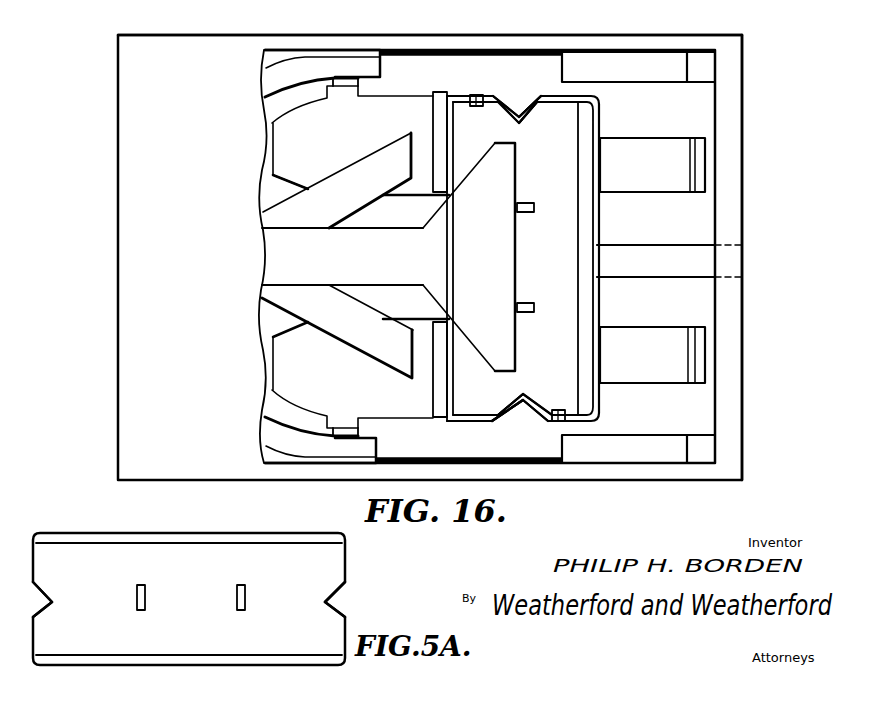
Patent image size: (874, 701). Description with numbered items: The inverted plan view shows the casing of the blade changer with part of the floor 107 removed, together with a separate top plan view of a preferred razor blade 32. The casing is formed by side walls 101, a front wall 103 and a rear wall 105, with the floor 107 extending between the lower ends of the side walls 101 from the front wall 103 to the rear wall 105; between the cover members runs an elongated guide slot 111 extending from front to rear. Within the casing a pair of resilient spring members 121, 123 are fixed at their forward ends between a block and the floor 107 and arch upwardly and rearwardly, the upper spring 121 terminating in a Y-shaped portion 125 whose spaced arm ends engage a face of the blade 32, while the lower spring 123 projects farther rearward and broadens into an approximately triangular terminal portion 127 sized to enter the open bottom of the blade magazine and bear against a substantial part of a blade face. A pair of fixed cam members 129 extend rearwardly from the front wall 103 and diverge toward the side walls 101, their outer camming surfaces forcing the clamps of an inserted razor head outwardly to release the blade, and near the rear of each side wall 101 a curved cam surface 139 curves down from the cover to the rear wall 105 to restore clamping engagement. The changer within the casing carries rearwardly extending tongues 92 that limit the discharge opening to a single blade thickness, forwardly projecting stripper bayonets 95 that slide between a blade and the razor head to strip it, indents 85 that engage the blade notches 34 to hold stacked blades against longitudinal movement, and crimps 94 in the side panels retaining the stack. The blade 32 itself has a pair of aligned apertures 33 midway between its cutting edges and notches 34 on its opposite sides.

In FIG. 16, the razor blade 32 is at (550, 222).
In FIG. 5A, the razor blade 32 is at (110, 563).
In FIG. 16, the apertures 33 is at (522, 203).
In FIG. 5A, the apertures 33 is at (235, 602).
In FIG. 16, the notches 34 is at (537, 107).
In FIG. 5A, the notches 34 is at (53, 605).
In FIG. 16, the indents 85 is at (528, 106).
In FIG. 16, the tongues 92 is at (628, 150).
In FIG. 16, the crimps 94 is at (477, 106).
In FIG. 16, the stripper bayonets 95 is at (297, 148).
In FIG. 16, the side walls 101 is at (410, 38).
In FIG. 16, the front wall 103 is at (118, 375).
In FIG. 16, the rear wall 105 is at (732, 153).
In FIG. 16, the floor 107 is at (180, 135).
In FIG. 16, the guide slot 111 is at (647, 262).
In FIG. 16, the spring member 121 is at (277, 222).
In FIG. 16, the spring member 123 is at (344, 247).
In FIG. 16, the Y-shaped portion 125 is at (403, 150).
In FIG. 16, the terminal portion 127 is at (487, 258).
In FIG. 16, the cam members 129 is at (363, 68).
In FIG. 16, the cam surface 139 is at (648, 67).